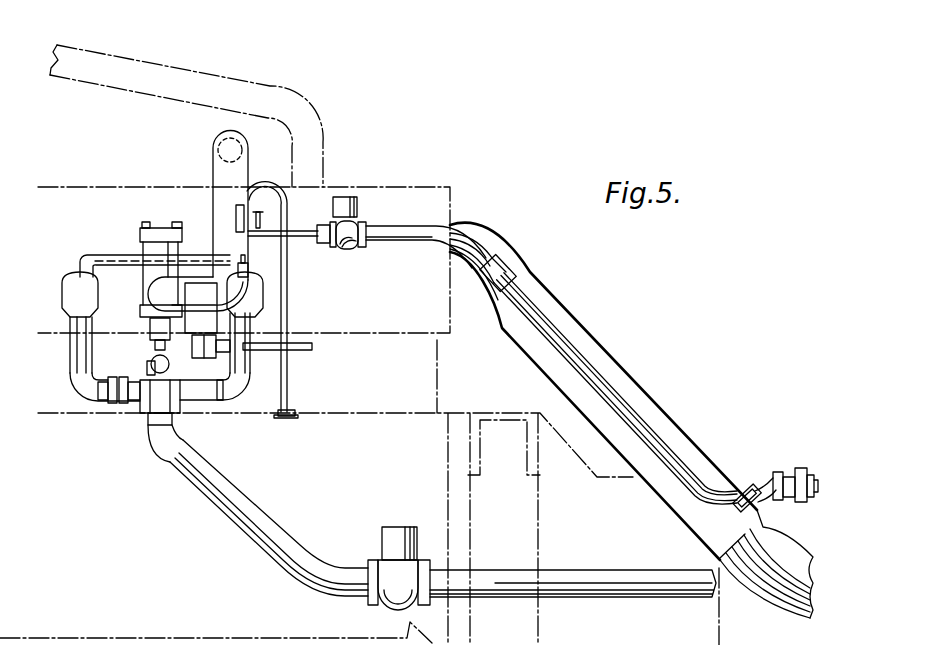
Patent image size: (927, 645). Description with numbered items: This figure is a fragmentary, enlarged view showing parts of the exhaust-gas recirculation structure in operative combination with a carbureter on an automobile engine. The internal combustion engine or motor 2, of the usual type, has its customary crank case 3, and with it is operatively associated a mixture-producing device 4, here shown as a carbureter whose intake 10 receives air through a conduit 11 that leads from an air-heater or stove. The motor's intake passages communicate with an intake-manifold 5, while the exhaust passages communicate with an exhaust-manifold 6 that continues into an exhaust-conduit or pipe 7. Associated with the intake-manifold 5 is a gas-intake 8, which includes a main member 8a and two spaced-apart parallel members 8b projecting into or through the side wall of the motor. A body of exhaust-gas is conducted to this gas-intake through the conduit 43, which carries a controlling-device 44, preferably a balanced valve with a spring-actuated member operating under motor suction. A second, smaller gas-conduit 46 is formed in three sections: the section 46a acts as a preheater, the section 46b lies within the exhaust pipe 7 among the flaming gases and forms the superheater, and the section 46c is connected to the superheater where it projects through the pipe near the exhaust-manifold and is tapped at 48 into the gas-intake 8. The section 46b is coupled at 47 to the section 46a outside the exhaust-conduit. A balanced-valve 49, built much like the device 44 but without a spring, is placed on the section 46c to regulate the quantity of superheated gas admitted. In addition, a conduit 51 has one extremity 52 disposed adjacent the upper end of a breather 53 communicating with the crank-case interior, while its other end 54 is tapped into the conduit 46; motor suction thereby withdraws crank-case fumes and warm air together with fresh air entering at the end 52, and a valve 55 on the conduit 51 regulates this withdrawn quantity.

The internal combustion engine or motor 2 is at (452, 191).
The crank case 3 is at (433, 386).
The mixture-producing device 4 is at (158, 232).
The intake-manifold 5 is at (108, 268).
The exhaust-manifold 6 is at (454, 222).
The exhaust-conduit or pipe 7 is at (498, 240).
The gas-intake 8 is at (149, 381).
The main member 8a is at (214, 408).
The parallel members 8b is at (78, 357).
The intake 10 is at (145, 295).
The conduit 11 is at (224, 210).
The conduit 43 is at (595, 580).
The controlling-device 44 is at (393, 570).
The gas-conduit 46 is at (760, 478).
The section 46a is at (810, 476).
The section 46b is at (648, 434).
The section 46c is at (396, 230).
The coupling 47 is at (790, 500).
The tap 48 is at (243, 275).
The balanced-valve 49 is at (347, 221).
The conduit 51 is at (286, 307).
The extremity 52 is at (293, 411).
The breather 53 is at (296, 417).
The end 54 is at (243, 270).
The valve 55 is at (262, 214).